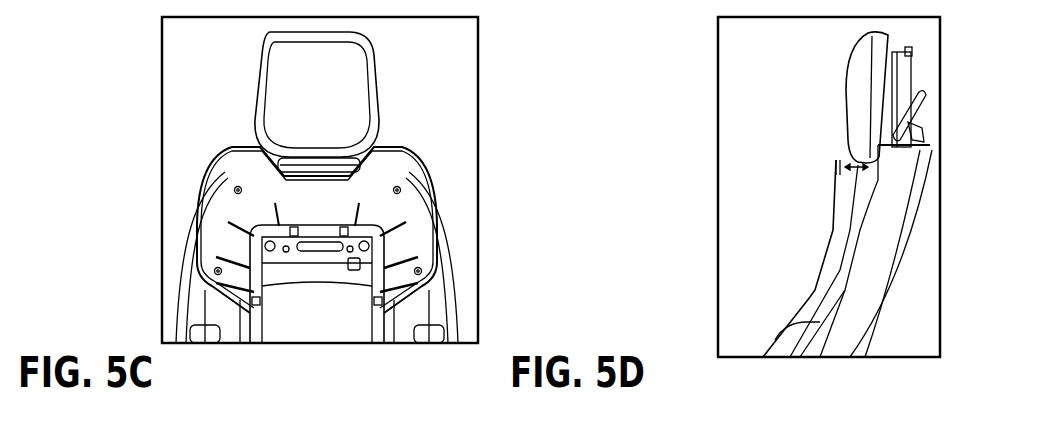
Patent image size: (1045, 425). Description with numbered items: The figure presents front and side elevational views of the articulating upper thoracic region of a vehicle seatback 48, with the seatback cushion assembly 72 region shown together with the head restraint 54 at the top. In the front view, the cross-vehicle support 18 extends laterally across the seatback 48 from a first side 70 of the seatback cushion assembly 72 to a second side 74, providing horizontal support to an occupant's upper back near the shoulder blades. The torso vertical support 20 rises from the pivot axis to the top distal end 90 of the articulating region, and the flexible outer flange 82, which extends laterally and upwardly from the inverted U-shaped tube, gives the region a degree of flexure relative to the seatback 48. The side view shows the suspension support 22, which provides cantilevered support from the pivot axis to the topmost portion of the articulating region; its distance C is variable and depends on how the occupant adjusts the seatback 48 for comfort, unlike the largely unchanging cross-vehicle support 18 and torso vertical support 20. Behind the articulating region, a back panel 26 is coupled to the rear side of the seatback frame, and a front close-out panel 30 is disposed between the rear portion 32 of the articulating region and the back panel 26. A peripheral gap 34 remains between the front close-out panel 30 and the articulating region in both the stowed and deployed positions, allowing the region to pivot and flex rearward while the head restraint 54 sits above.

In FIG. 5C, the cross-vehicle support 18 is at (427, 240).
In FIG. 5D, the cross-vehicle support 18 is at (902, 266).
In FIG. 5C, the torso vertical support 20 is at (322, 205).
In FIG. 5D, the torso vertical support 20 is at (823, 222).
In FIG. 5D, the suspension support 22 is at (905, 165).
In FIG. 5D, the back panel 26 is at (920, 230).
In FIG. 5C, the front close-out panel 30 is at (440, 315).
In FIG. 5D, the front close-out panel 30 is at (918, 128).
In FIG. 5D, the rear portion 32 is at (905, 185).
In FIG. 5D, the peripheral gap 34 is at (903, 248).
In FIG. 5C, the seatback 48 is at (447, 287).
In FIG. 5D, the seatback 48 is at (918, 213).
In FIG. 5C, the head restraint 54 is at (290, 88).
In FIG. 5D, the head restraint 54 is at (864, 82).
In FIG. 5C, the first side 70 is at (193, 225).
In FIG. 5C, the seatback cushion assembly 72 is at (427, 170).
In FIG. 5C, the second side 74 is at (443, 223).
In FIG. 5C, the outer flange 82 is at (222, 195).
In FIG. 5C, the top distal end 90 is at (322, 190).
In FIG. 5D, the top distal end 90 is at (840, 172).
In FIG. 5D, the distance C is at (833, 158).